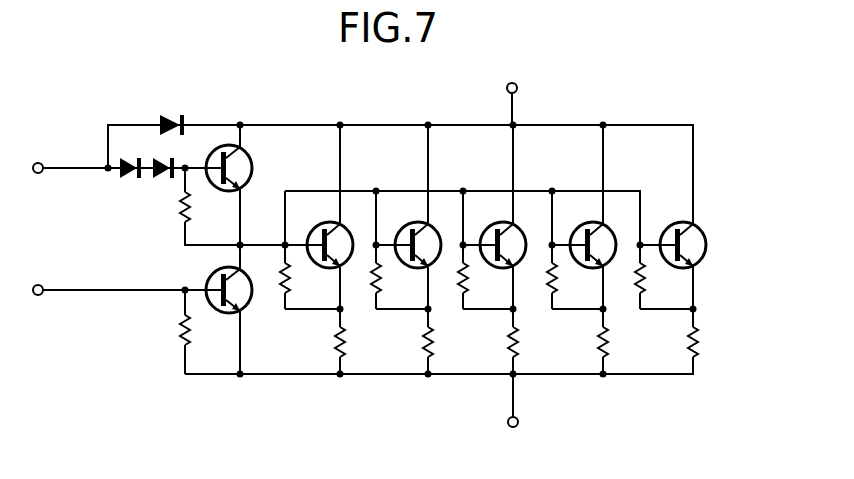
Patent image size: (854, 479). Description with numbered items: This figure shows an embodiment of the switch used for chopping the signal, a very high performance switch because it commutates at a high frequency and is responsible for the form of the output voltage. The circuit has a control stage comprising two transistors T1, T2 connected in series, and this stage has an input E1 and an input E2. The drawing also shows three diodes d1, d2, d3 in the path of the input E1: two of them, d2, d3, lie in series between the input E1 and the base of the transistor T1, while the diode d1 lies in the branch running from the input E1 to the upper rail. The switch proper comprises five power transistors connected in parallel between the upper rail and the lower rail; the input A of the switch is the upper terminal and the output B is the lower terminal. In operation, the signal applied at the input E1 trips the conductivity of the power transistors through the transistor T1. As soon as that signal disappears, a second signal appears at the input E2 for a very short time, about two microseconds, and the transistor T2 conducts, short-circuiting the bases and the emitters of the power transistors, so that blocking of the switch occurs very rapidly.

The input E1 is at (38, 163).
The input E2 is at (38, 285).
The diode d1 is at (172, 118).
The diode d2 is at (125, 189).
The diode d3 is at (165, 189).
The transistor T1 is at (256, 170).
The transistor T2 is at (252, 300).
The input of the switch A is at (506, 90).
The output of the switch B is at (502, 421).